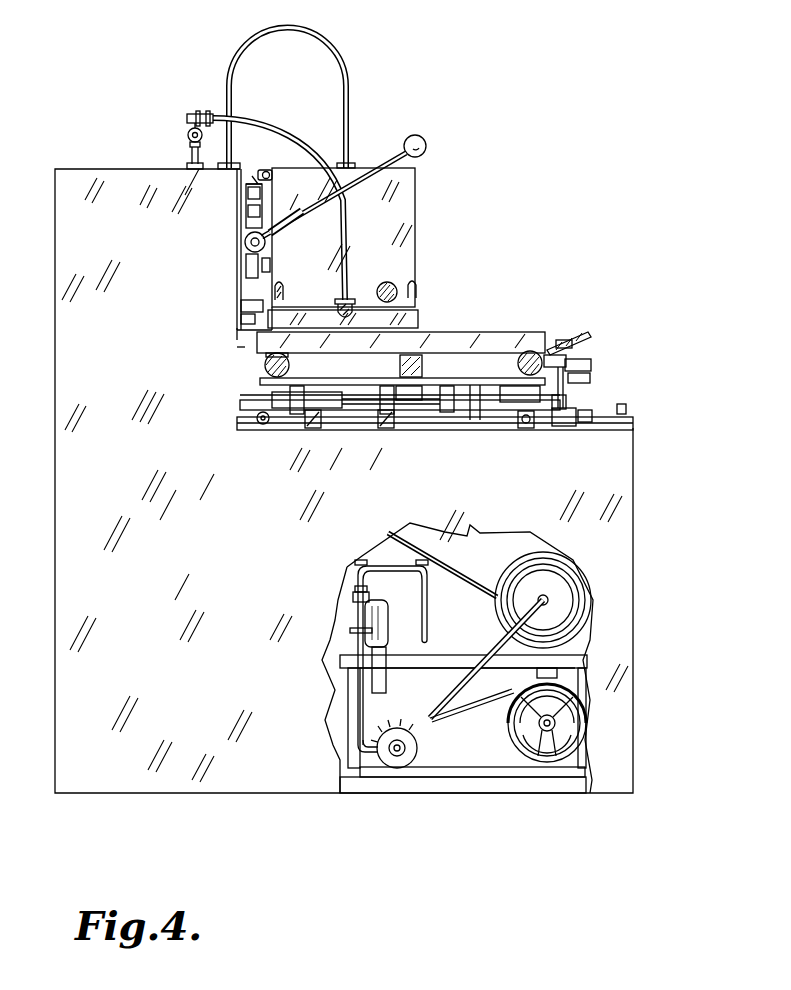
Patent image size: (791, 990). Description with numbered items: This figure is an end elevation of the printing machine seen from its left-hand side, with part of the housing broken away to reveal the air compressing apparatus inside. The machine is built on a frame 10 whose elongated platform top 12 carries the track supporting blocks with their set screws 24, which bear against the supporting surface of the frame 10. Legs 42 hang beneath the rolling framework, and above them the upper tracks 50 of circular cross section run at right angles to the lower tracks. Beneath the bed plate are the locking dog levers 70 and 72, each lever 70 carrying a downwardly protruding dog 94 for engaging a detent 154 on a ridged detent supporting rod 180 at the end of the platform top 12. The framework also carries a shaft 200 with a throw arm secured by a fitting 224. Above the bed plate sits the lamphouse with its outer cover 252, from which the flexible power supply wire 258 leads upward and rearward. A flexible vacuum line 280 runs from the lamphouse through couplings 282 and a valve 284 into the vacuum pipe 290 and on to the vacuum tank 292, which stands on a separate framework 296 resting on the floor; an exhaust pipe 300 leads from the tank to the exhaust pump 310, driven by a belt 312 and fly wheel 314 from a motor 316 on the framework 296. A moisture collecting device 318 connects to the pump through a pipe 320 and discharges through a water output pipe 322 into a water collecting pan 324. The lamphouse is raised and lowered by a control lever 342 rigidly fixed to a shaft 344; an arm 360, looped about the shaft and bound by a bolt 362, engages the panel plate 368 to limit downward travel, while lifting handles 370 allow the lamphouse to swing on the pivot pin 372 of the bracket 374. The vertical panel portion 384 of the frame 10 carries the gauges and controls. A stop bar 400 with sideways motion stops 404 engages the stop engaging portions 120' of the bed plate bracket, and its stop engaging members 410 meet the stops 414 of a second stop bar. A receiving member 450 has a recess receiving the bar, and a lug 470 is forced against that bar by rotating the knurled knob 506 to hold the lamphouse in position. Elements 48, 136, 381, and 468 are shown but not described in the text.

The frame 10 is at (642, 477).
The platform top 12 is at (634, 424).
The set screw 24 is at (565, 430).
The leg 42 is at (526, 430).
The roller 48 is at (266, 428).
The track 50 is at (289, 366).
The locking dog lever 70 is at (585, 336).
The locking dog lever 72 is at (567, 361).
The dog 94 is at (574, 348).
The stop engaging portion 120' is at (401, 330).
The clamp block 136 is at (592, 373).
The detent 154 is at (385, 430).
The detent supporting rod 180 is at (345, 430).
The shaft 200 is at (486, 408).
The fitting 224 is at (566, 400).
The outer cover 252 is at (416, 196).
The flexible power supply wire 258 is at (350, 76).
The vacuum line 280 is at (349, 259).
The coupling 282 is at (185, 116).
The valve 284 is at (188, 135).
The vacuum pipe 290 is at (191, 159).
The vacuum tank 292 is at (528, 570).
The framework 296 is at (460, 660).
The exhaust pipe 300 is at (462, 702).
The exhaust pump 310 is at (418, 750).
The belt 312 is at (458, 772).
The fly wheel 314 is at (550, 768).
The motor 316 is at (567, 700).
The moisture collecting device 318 is at (380, 603).
The pipe 320 is at (351, 613).
The water output pipe 322 is at (428, 600).
The water collecting pan 324 is at (428, 681).
The control lever 342 is at (427, 146).
The shaft 344 is at (246, 245).
The arm 360 is at (245, 272).
The bolt 362 is at (270, 258).
The panel plate 368 is at (243, 226).
The lifting handle 370 is at (395, 288).
The pivot pin 372 is at (268, 171).
The bracket 374 is at (258, 170).
The stop block 381 is at (240, 212).
The panel portion 384 is at (237, 348).
The stop bar 400 is at (331, 384).
The sideways motion stop 404 is at (423, 366).
The stop engaging member 410 is at (401, 404).
The stop 414 is at (627, 405).
The receiving member 450 is at (240, 308).
The column plate 468 is at (236, 333).
The lug 470 is at (248, 322).
The knurled knob 506 is at (283, 292).